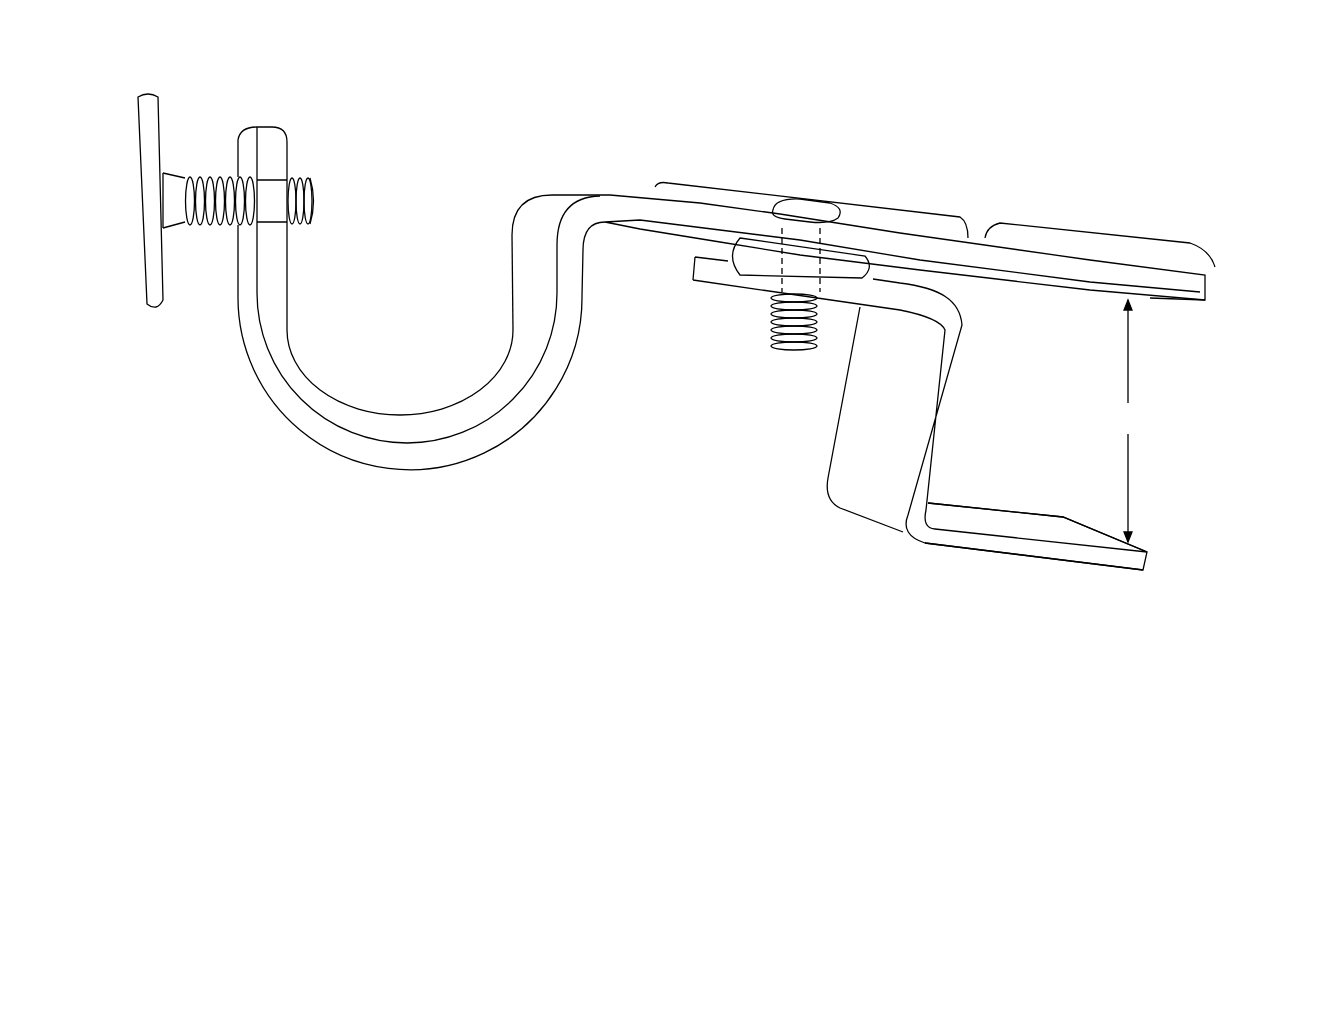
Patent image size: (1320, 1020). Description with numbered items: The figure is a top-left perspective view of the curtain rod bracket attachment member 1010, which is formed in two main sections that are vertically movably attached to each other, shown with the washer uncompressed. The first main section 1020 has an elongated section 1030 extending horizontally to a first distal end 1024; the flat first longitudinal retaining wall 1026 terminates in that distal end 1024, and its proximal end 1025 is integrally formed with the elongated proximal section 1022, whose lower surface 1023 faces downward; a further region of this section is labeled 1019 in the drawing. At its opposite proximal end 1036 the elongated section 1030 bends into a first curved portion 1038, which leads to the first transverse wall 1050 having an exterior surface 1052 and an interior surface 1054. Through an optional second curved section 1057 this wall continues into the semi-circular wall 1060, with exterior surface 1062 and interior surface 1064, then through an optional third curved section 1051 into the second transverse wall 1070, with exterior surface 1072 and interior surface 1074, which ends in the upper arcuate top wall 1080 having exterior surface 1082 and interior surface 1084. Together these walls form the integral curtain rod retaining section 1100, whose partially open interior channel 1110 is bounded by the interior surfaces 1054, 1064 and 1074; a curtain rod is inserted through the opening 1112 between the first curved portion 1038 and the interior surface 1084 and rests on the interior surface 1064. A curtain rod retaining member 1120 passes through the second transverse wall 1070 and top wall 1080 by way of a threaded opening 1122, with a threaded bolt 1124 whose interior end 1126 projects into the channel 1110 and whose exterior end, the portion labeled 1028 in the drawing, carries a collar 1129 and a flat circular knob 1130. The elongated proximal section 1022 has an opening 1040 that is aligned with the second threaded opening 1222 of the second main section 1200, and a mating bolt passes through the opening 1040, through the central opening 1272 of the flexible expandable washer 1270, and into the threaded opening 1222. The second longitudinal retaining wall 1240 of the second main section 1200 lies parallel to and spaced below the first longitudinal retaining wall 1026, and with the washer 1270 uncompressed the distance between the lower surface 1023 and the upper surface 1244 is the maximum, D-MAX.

The curtain rod bracket attachment member 1010 is at (744, 95).
The notch 1019 is at (967, 236).
The first main section 1020 is at (658, 158).
The elongated proximal section 1022 is at (765, 190).
The lower surface 1023 is at (1160, 302).
The first distal end 1024 is at (1210, 290).
The proximal end 1025 is at (981, 236).
The first longitudinal retaining wall 1026 is at (1108, 237).
The bolt neck 1028 is at (185, 223).
The elongated section 1030 is at (1070, 150).
The proximal end 1036 is at (607, 203).
The first curved portion 1038 is at (550, 207).
The opening 1040 is at (828, 232).
The first transverse wall 1050 is at (568, 358).
The third curved section 1051 is at (280, 395).
The exterior surface 1052 is at (583, 320).
The interior surface 1054 is at (520, 315).
The second curved section 1057 is at (538, 420).
The semi-circular wall 1060 is at (452, 485).
The exterior surface 1062 is at (375, 468).
The interior surface 1064 is at (425, 420).
The second transverse wall 1070 is at (221, 369).
The exterior surface 1072 is at (247, 318).
The interior surface 1074 is at (287, 272).
The upper arcuate top wall 1080 is at (262, 113).
The exterior surface 1082 is at (250, 153).
The interior surface 1084 is at (287, 157).
The curtain rod retaining section 1100 is at (283, 493).
The partially open interior channel 1110 is at (348, 334).
The opening 1112 is at (417, 211).
The curtain rod retaining member 1120 is at (121, 283).
The threaded opening 1122 is at (268, 213).
The threaded bolt 1124 is at (200, 177).
The interior end 1126 is at (313, 197).
The collar 1129 is at (173, 213).
The flat circular knob 1130 is at (155, 295).
The second main section 1200 is at (795, 471).
The second threaded opening 1222 is at (790, 282).
The second longitudinal retaining wall 1240 is at (983, 556).
The upper surface 1244 is at (1005, 508).
The flexible expandable washer 1270 is at (957, 298).
The central opening 1272 is at (795, 250).